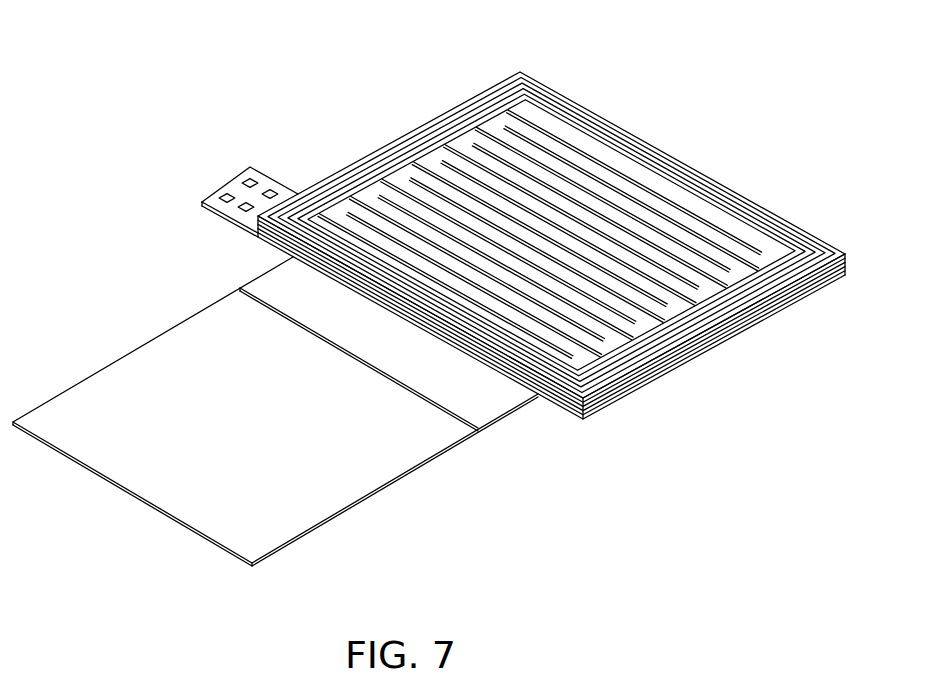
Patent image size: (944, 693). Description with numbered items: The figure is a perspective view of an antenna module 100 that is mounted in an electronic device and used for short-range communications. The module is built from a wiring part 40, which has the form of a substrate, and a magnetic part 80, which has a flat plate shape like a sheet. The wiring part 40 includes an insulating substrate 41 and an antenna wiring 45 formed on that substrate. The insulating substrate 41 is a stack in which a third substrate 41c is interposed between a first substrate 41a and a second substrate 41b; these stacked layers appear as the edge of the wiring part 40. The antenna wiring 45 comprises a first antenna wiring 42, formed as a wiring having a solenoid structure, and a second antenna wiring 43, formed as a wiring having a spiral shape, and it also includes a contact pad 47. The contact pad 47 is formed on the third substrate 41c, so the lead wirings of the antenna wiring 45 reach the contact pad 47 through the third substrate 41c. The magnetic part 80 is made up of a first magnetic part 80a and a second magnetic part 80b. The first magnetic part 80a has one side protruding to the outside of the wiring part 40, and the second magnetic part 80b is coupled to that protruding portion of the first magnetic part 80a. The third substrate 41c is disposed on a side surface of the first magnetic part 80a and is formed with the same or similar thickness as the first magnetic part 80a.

The antenna module 100 is at (303, 31).
The wiring part 40 is at (836, 240).
The insulating substrate 41 is at (678, 426).
The first substrate 41a is at (613, 412).
The second substrate 41b is at (598, 425).
The third substrate 41c is at (605, 421).
The first antenna wiring 42 is at (630, 178).
The second antenna wiring 43 is at (727, 197).
The antenna wiring 45 is at (735, 101).
The contact pad 47 is at (258, 176).
The magnetic part 80 is at (564, 486).
The first magnetic part 80a is at (476, 398).
The second magnetic part 80b is at (342, 462).